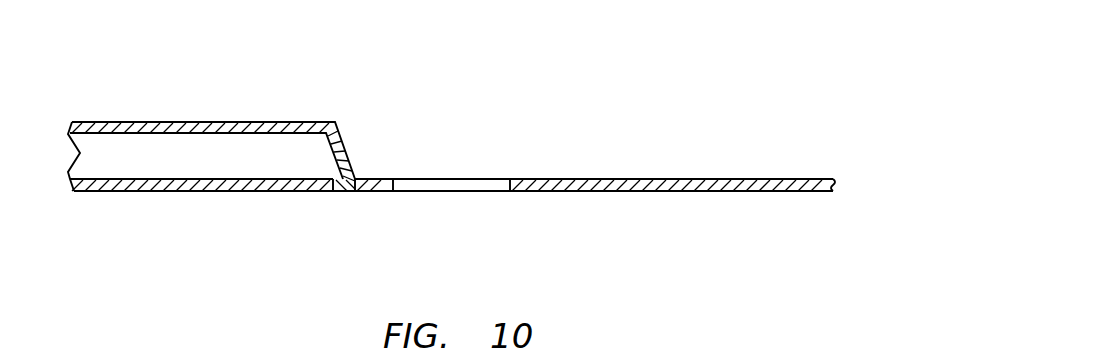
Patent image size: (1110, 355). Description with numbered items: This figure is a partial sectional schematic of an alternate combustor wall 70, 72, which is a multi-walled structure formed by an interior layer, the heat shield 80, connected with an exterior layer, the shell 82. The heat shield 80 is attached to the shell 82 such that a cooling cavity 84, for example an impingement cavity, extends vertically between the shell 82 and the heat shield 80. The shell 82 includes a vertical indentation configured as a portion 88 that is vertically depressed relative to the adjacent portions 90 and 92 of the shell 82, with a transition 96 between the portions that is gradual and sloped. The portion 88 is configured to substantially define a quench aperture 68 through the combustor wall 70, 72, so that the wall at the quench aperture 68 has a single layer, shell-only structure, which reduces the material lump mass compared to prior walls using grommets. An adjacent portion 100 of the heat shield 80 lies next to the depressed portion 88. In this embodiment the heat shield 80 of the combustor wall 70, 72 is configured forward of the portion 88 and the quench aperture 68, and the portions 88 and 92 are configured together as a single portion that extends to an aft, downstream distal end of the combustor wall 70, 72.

The inner wall 70 is at (758, 98).
The outer wall 72 is at (819, 35).
The shell 82 is at (93, 122).
The adjacent portion of the shell 90 is at (295, 122).
The transition 96 is at (347, 150).
The cooling cavity 84 is at (198, 170).
The heat shield 80 is at (83, 192).
The adjacent portion of the heat shield 100 is at (290, 192).
The portion of the shell 88 is at (370, 192).
The quench aperture 68 is at (452, 183).
The adjacent portion of the shell 92 is at (602, 180).